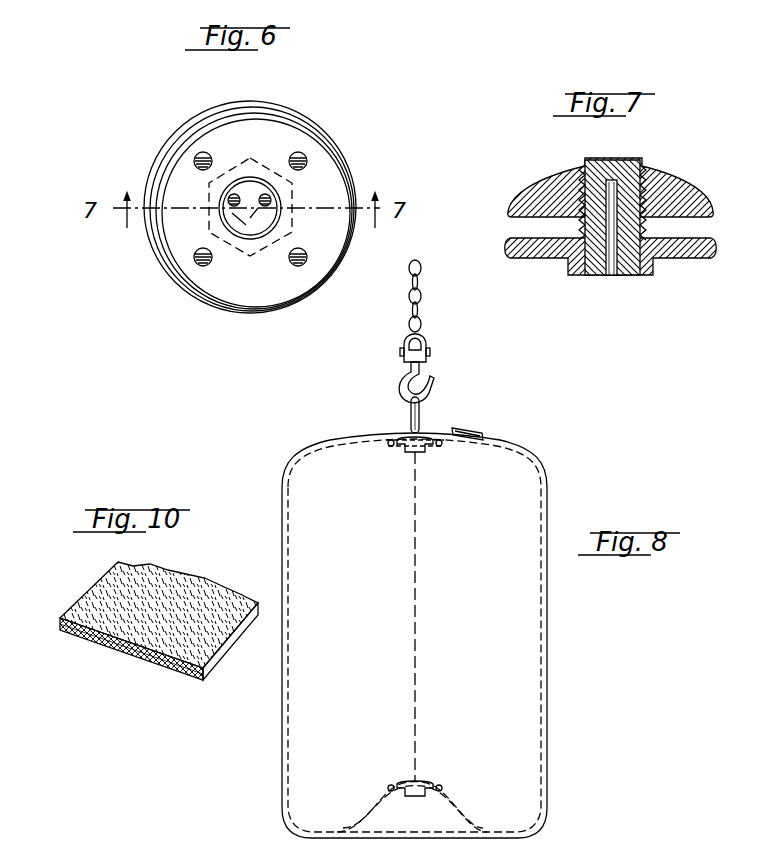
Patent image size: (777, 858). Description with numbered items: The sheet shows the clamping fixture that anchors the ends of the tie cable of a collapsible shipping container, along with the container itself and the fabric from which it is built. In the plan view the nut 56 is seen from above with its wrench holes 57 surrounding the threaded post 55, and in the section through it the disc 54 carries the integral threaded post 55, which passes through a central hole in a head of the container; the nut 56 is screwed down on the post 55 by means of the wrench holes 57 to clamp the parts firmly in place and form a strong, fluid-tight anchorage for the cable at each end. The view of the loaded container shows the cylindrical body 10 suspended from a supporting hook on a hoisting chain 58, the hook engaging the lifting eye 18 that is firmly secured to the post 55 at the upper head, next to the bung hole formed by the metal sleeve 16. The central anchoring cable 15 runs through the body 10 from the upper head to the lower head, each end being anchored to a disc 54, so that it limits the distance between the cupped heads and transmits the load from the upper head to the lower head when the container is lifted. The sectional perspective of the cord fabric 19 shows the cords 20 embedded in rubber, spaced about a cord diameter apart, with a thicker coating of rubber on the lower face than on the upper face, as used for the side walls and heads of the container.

In FIG. 8, the cylindrical body 10 is at (549, 657).
In FIG. 8, the central anchoring cable 15 is at (412, 600).
In FIG. 8, the metal sleeve 16 is at (478, 434).
In FIG. 8, the lifting eye 18 is at (410, 414).
In FIG. 10, the cord fabric 19 is at (132, 660).
In FIG. 10, the cords 20 is at (102, 610).
In FIG. 7, the disc 54 is at (565, 270).
In FIG. 6, the threaded post 55 is at (236, 186).
In FIG. 7, the threaded post 55 is at (617, 172).
In FIG. 6, the nut 56 is at (298, 116).
In FIG. 7, the nut 56 is at (680, 197).
In FIG. 8, the nut 56 is at (426, 437).
In FIG. 6, the wrench holes 57 is at (305, 155).
In FIG. 7, the wrench holes 57 is at (562, 188).
In FIG. 8, the hoisting chain 58 is at (423, 328).